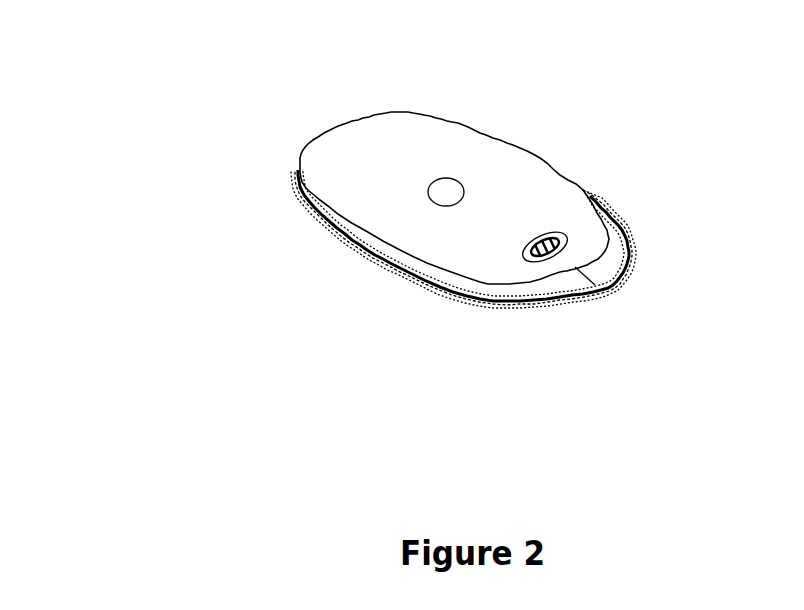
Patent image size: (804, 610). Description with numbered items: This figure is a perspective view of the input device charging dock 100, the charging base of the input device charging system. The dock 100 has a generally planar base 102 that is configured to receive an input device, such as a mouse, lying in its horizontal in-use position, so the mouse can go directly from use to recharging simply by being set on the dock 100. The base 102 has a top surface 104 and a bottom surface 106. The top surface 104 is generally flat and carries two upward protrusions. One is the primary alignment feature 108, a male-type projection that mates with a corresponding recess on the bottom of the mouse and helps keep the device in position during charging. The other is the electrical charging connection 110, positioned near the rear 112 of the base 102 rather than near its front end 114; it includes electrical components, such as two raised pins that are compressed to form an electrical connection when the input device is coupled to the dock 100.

The input device charging dock 100 is at (172, 81).
The base 102 is at (328, 220).
The top surface 104 is at (552, 200).
The bottom surface 106 is at (382, 265).
The primary alignment feature 108 is at (452, 180).
The electrical charging connection 110 is at (567, 232).
The rear 112 is at (597, 288).
The front end 114 is at (340, 128).